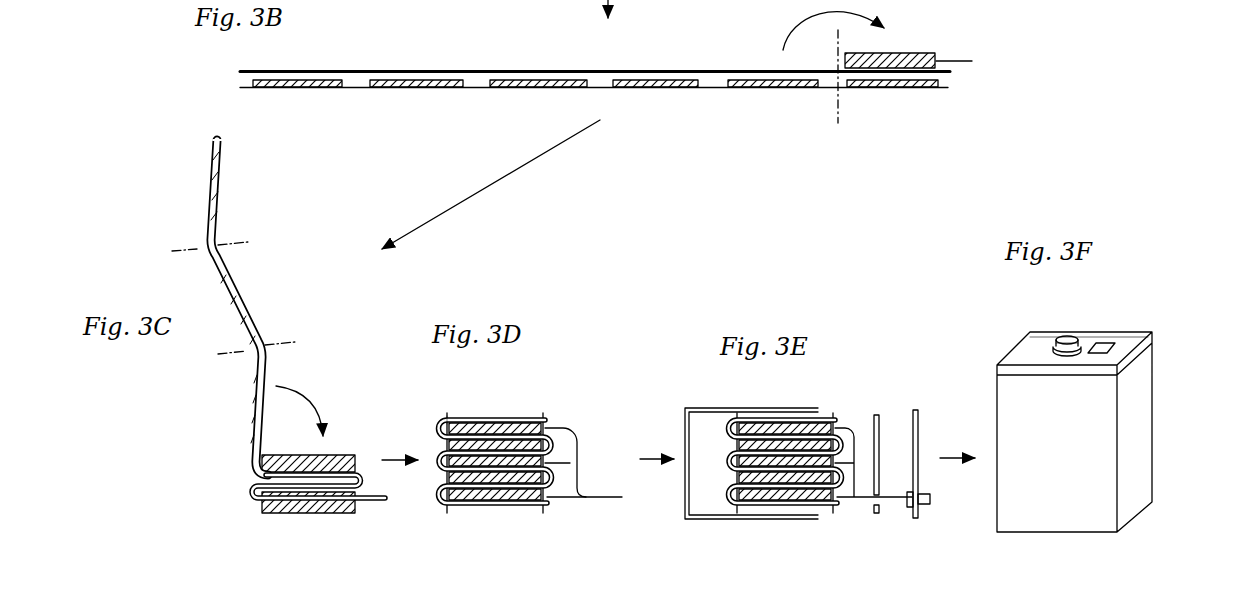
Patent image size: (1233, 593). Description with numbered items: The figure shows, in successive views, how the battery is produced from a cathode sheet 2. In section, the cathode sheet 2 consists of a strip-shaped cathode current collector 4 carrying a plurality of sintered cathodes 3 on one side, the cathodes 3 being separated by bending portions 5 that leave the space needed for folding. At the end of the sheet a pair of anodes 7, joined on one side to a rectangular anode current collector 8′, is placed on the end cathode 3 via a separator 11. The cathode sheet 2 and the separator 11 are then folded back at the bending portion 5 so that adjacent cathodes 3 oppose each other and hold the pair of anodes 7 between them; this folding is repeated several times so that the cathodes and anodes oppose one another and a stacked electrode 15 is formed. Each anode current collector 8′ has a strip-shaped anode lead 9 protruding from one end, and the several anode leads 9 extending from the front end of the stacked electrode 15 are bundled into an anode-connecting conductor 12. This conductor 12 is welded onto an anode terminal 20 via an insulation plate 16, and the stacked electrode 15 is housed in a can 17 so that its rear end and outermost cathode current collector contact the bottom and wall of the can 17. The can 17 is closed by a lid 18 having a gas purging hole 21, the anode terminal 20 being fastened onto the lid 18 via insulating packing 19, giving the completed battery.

In FIG. 3B, the cathode sheet 2 is at (1030, 62).
In FIG. 3B, the cathode 3 is at (303, 89).
In FIG. 3B, the cathode current collector 4 is at (940, 88).
In FIG. 3B, the bending portion 5 is at (366, 89).
In FIG. 3B, the anode 7 is at (889, 68).
In FIG. 3C, the anode 7 is at (278, 503).
In FIG. 3D, the anode 7 is at (510, 430).
In FIG. 3B, the anode current collector 8′ is at (946, 61).
In FIG. 3C, the anode current collector 8′ is at (373, 500).
In FIG. 3D, the anode current collector 8′ is at (466, 426).
In FIG. 3D, the anode lead 9 is at (548, 450).
In FIG. 3B, the separator 11 is at (950, 71).
In FIG. 3D, the anode-connecting conductor 12 is at (606, 499).
In FIG. 3E, the anode-connecting conductor 12 is at (887, 500).
In FIG. 3D, the stacked electrode 15 is at (434, 418).
In FIG. 3E, the stacked electrode 15 is at (722, 422).
In FIG. 3E, the insulation plate 16 is at (881, 424).
In FIG. 3E, the can 17 is at (790, 408).
In FIG. 3F, the can 17 is at (1166, 343).
In FIG. 3E, the lid 18 is at (919, 428).
In FIG. 3F, the lid 18 is at (1150, 344).
In FIG. 3E, the insulating packing 19 is at (920, 507).
In FIG. 3F, the insulating packing 19 is at (1052, 342).
In FIG. 3E, the anode terminal 20 is at (930, 496).
In FIG. 3F, the anode terminal 20 is at (1066, 334).
In FIG. 3F, the gas purging hole 21 is at (1108, 345).